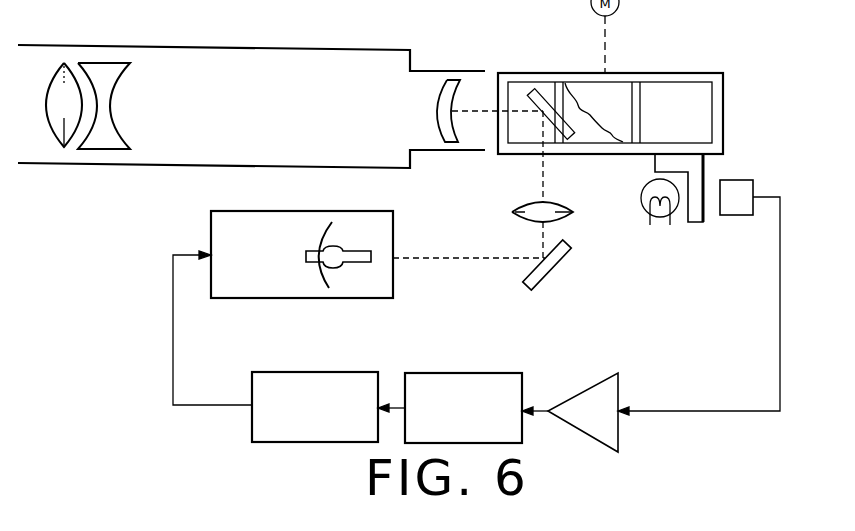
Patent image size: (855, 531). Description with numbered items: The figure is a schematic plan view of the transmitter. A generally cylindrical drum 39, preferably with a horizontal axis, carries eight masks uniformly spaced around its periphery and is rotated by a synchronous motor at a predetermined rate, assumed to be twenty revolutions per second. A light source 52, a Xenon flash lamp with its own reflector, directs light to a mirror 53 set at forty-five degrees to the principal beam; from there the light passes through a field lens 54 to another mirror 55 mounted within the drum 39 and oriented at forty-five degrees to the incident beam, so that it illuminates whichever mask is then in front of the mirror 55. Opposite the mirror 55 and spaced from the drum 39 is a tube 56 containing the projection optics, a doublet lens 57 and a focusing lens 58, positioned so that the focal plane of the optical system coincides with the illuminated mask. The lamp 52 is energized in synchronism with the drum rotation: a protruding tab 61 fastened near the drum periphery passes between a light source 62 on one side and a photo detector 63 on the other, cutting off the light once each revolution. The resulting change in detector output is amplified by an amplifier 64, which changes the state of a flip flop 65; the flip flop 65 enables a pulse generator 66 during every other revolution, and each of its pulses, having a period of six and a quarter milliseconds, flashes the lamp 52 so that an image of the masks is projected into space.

The drum 39 is at (700, 75).
The light source 52 is at (394, 213).
The mirror 53 is at (571, 246).
The field lens 54 is at (556, 203).
The mirror 55 is at (534, 90).
The tube 56 is at (389, 51).
The doublet lens 57 is at (115, 99).
The focusing lens 58 is at (437, 108).
The tab 61 is at (697, 223).
The light source 62 is at (644, 216).
The photo detector 63 is at (742, 181).
The amplifier 64 is at (619, 374).
The flip flop 65 is at (511, 373).
The pulse generator 66 is at (364, 372).